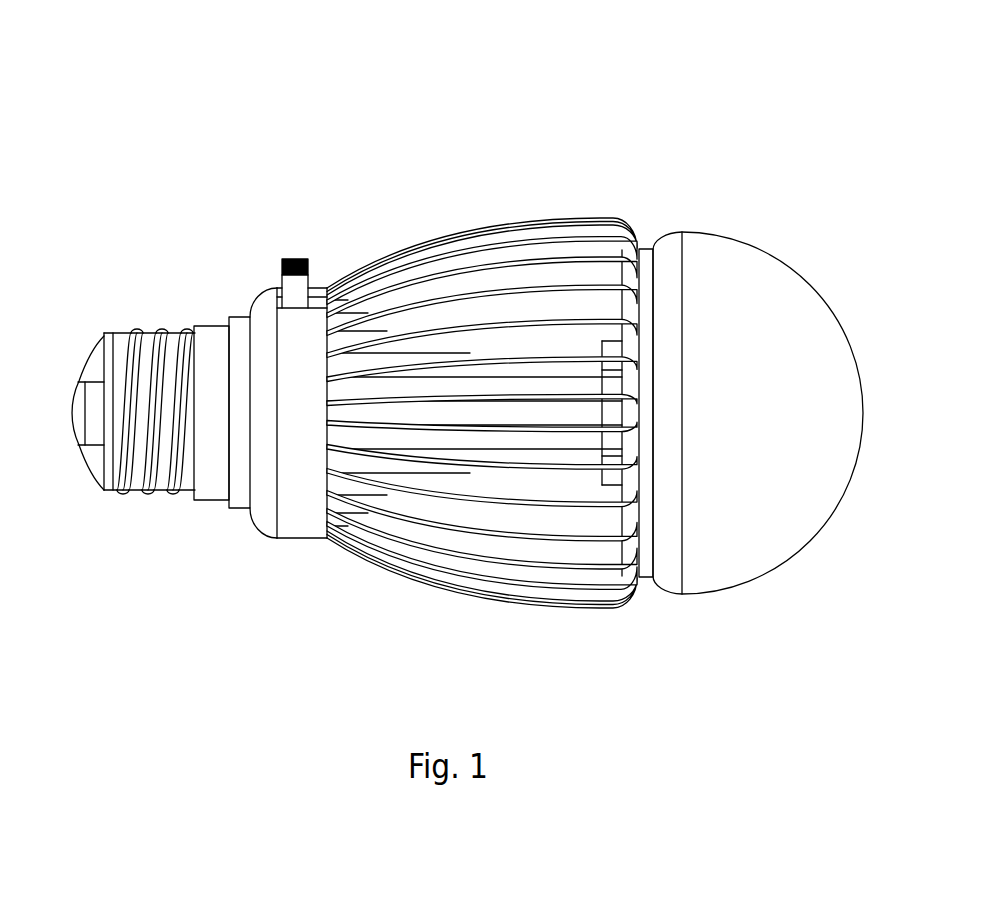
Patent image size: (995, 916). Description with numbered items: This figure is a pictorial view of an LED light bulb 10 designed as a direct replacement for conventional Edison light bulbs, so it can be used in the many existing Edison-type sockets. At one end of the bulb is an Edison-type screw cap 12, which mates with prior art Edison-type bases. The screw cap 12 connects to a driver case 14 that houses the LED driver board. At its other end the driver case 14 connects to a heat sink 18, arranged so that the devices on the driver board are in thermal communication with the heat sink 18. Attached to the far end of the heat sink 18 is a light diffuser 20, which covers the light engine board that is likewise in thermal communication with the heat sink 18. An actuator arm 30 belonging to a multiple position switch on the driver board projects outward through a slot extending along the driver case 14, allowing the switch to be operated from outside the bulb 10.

The LED light bulb 10 is at (745, 94).
The Edison-type screw cap 12 is at (104, 493).
The driver case 14 is at (270, 545).
The heat sink 18 is at (548, 209).
The light diffuser 20 is at (792, 254).
The actuator arm 30 is at (283, 247).